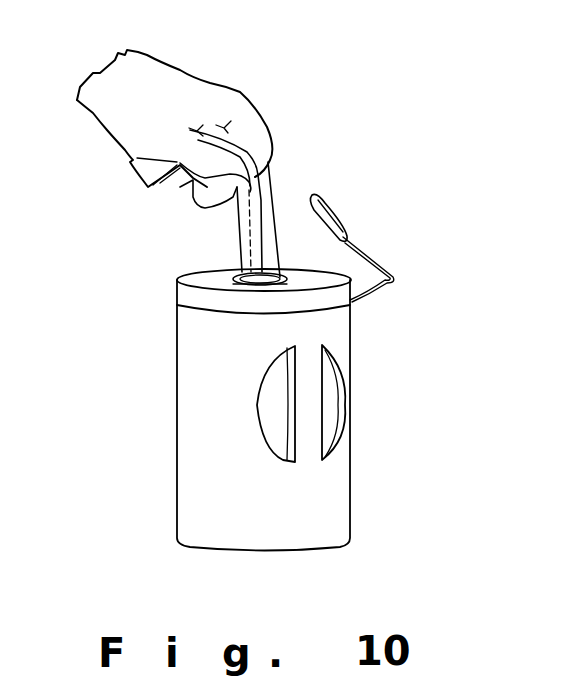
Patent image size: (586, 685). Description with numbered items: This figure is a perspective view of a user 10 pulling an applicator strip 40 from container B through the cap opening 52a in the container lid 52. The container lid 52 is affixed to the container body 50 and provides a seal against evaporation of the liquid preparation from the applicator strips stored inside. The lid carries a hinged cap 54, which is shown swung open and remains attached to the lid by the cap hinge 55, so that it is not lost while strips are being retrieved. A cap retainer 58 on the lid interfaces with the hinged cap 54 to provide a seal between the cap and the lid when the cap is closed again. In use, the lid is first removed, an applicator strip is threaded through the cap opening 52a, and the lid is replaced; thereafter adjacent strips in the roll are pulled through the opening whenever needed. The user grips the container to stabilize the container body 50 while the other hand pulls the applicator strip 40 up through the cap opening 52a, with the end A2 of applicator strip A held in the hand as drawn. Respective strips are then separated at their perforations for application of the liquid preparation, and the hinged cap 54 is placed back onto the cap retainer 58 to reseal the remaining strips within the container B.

The user 10 is at (180, 72).
The applicator strip 40 is at (274, 198).
The end of applicator strip A2 is at (236, 150).
The applicator strip A is at (287, 205).
The container body 50 is at (350, 488).
The container B is at (378, 399).
The container lid 52 is at (173, 302).
The cap opening 52a is at (243, 272).
The cap retainer 58 is at (228, 275).
The hinged cap 54 is at (337, 220).
The cap hinge 55 is at (393, 283).